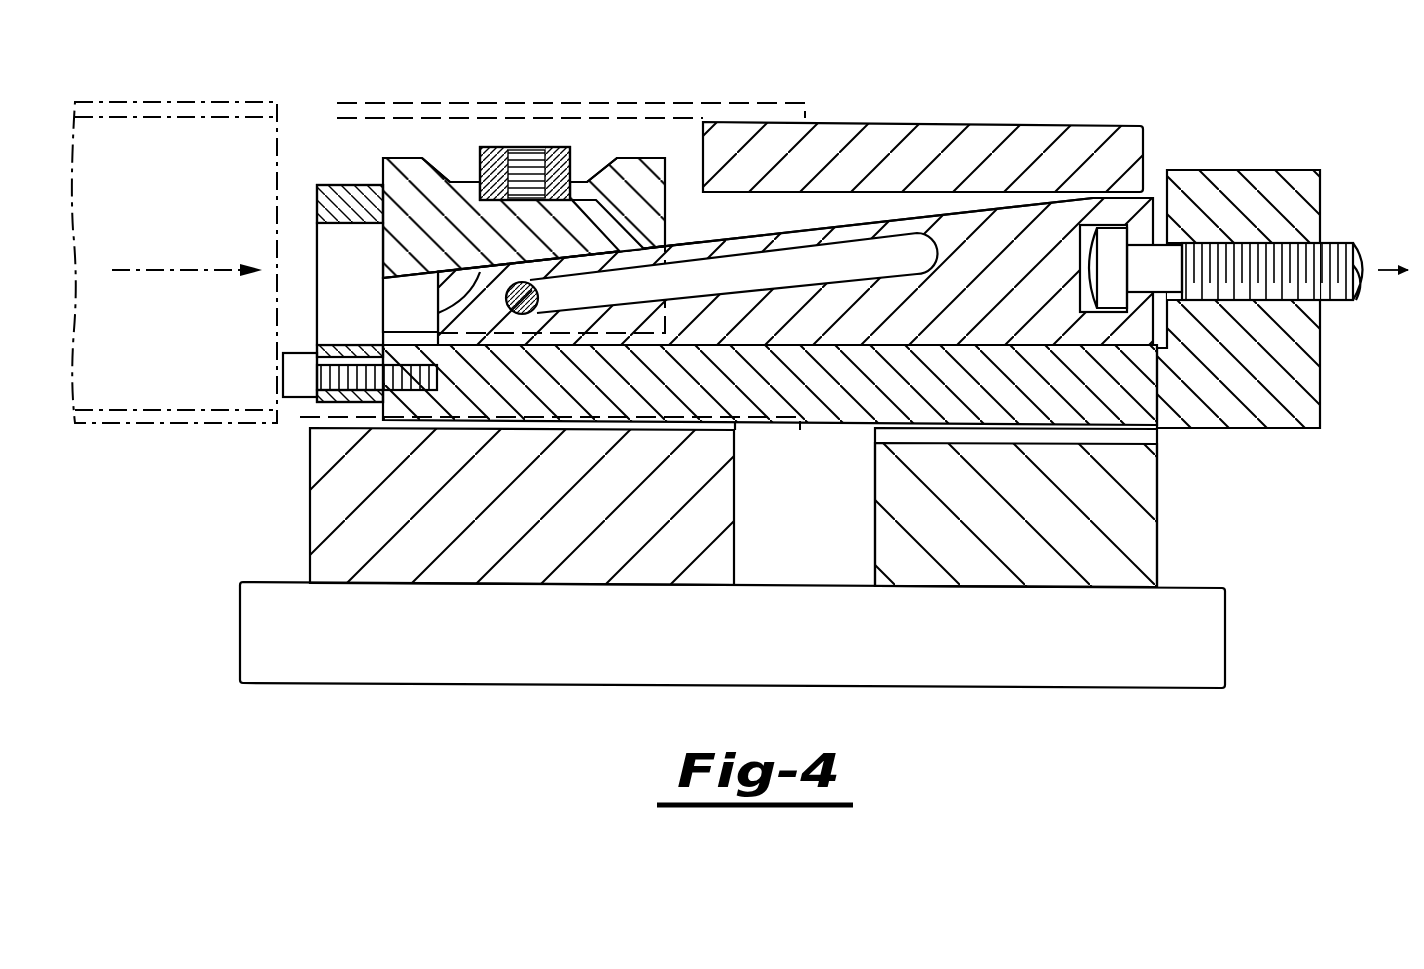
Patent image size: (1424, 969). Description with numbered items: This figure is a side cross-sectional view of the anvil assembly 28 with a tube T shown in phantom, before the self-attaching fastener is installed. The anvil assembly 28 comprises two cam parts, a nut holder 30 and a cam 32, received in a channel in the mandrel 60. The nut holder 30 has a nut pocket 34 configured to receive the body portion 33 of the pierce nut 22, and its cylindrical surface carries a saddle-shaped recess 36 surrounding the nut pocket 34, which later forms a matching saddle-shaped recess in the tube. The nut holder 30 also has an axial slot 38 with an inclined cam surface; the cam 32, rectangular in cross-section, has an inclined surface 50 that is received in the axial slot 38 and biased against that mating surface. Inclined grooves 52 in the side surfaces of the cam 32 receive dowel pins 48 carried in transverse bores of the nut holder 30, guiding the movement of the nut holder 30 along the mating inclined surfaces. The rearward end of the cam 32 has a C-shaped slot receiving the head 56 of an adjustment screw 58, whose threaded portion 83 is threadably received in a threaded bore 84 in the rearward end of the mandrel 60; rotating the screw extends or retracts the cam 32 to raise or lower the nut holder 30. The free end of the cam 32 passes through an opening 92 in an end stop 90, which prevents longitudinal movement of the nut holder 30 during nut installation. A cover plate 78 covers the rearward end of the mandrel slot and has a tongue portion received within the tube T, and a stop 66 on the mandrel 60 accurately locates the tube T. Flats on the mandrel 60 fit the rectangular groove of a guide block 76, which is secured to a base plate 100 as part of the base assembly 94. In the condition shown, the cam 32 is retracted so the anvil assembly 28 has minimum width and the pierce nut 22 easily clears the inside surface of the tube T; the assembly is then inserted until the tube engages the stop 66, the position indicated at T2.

The pierce nut 22 is at (571, 153).
The anvil assembly 28 is at (923, 102).
The nut holder 30 is at (403, 172).
The cam 32 is at (976, 308).
The body portion 33 is at (497, 178).
The nut pocket 34 is at (633, 254).
The saddle-shaped recess 36 is at (440, 168).
The axial slot 38 is at (437, 312).
The dowel pins 48 is at (540, 296).
The inclined surface 50 is at (785, 232).
The inclined grooves 52 is at (805, 282).
The head 56 is at (1108, 245).
The adjustment screw 58 is at (1332, 312).
The mandrel 60 is at (1278, 385).
The stop 66 is at (800, 420).
The guide block 76 is at (1125, 522).
The cover plate 78 is at (905, 160).
The threaded portion 83 is at (1345, 248).
The threaded bore 84 is at (1212, 250).
The end stop 90 is at (345, 215).
The opening 92 is at (362, 226).
The base assembly 94 is at (792, 558).
The base plate 100 is at (350, 492).
The tube T is at (195, 422).
The tube position T2 is at (686, 104).